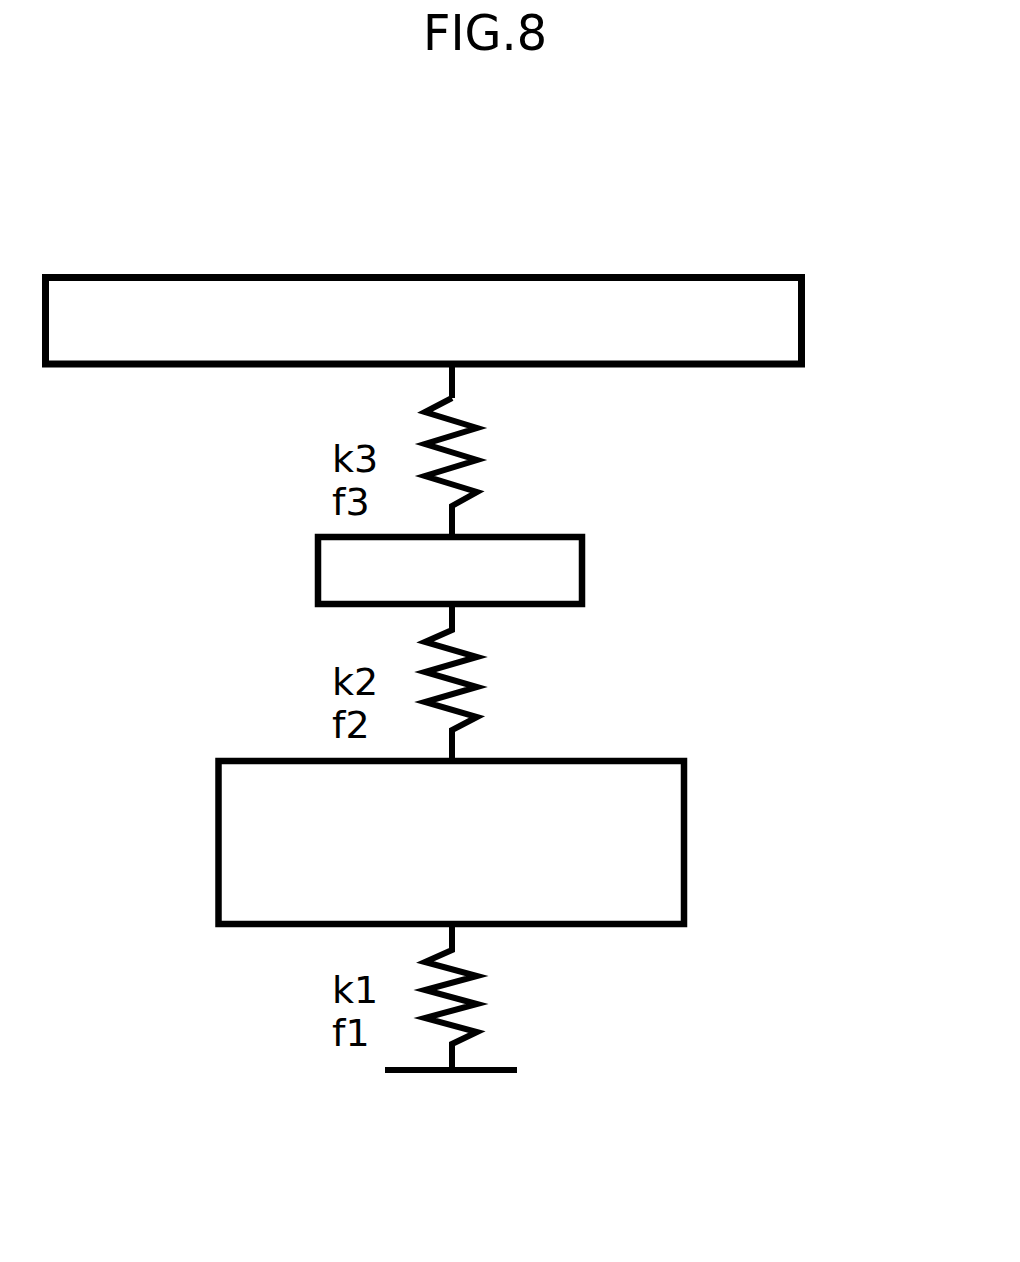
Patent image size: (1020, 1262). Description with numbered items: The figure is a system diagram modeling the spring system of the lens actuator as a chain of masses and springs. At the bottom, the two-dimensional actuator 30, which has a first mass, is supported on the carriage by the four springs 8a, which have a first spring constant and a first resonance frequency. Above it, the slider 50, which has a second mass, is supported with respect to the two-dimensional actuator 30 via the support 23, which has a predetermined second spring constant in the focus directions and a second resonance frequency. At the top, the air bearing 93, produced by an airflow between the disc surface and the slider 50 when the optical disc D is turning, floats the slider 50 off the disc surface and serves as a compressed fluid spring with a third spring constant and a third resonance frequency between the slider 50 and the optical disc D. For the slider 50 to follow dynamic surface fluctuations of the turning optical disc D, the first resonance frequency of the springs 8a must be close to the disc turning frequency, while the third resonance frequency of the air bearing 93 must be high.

The optical disc D is at (760, 330).
The air bearing 93 is at (465, 455).
The slider 50 is at (563, 577).
The support 23 is at (468, 682).
The two-dimensional actuator 30 is at (665, 845).
The springs 8a is at (463, 1000).